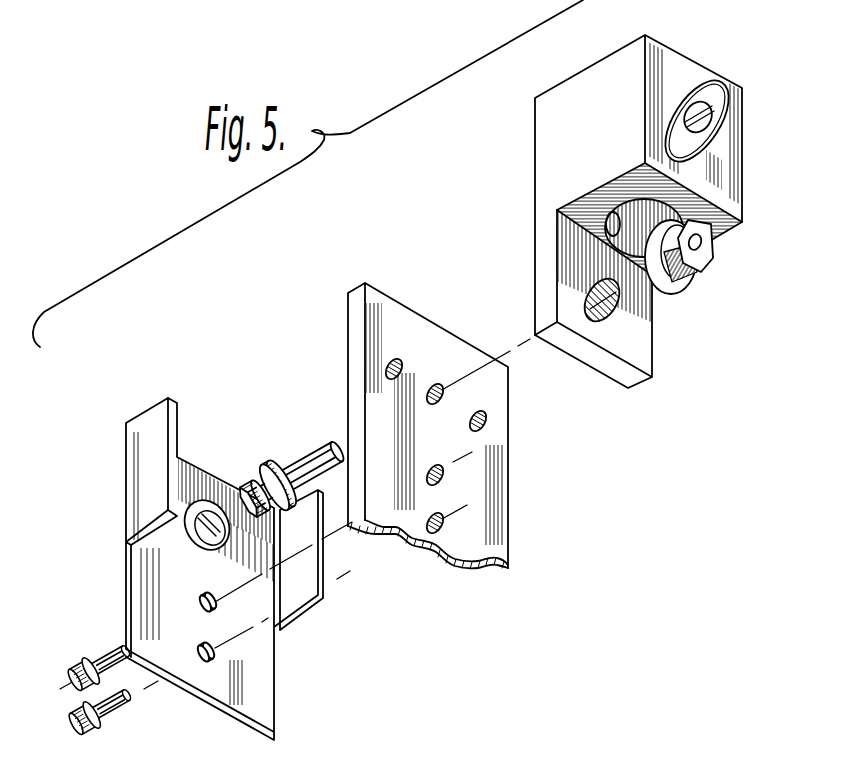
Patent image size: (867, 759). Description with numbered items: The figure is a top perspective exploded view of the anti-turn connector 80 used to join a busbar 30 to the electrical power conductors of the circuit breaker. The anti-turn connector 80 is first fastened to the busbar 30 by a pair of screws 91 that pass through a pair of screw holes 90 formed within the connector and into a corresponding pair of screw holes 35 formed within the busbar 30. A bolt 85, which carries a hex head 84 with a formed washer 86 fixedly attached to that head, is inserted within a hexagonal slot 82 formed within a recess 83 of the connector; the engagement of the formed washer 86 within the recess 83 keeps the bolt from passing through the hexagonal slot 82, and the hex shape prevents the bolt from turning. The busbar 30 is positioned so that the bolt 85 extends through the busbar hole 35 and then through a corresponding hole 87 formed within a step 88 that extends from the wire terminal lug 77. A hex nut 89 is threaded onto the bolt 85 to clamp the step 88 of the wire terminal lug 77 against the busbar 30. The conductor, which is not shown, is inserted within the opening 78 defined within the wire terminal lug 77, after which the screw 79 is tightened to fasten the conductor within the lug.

The busbar 30 is at (490, 537).
The screw holes 35 is at (442, 517).
The wire terminal lug 77 is at (520, 173).
The opening 78 is at (557, 209).
The screw 79 is at (701, 108).
The anti-turn connector 80 is at (287, 699).
The hexagonal slot 82 is at (188, 532).
The recess 83 is at (220, 548).
The hex head 84 is at (247, 482).
The bolt 85 is at (330, 440).
The formed washer 86 is at (277, 465).
The hole 87 is at (618, 312).
The step 88 is at (570, 295).
The hex nut 89 is at (708, 262).
The screw holes 90 is at (205, 645).
The screws 91 is at (80, 690).